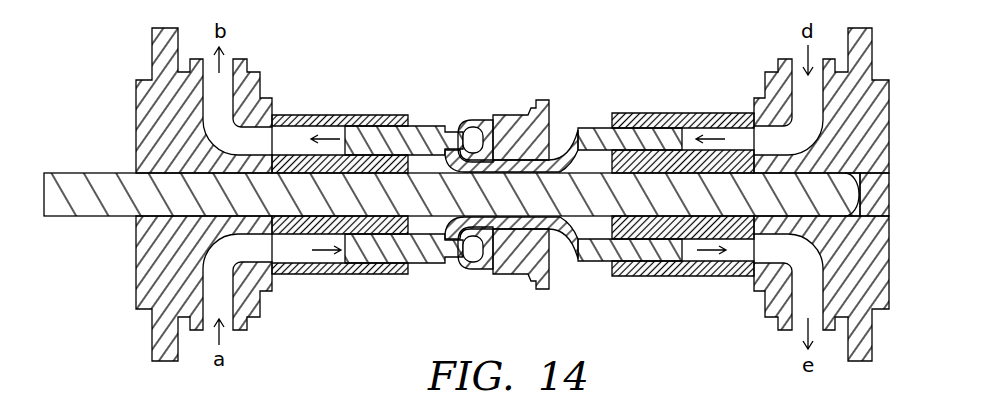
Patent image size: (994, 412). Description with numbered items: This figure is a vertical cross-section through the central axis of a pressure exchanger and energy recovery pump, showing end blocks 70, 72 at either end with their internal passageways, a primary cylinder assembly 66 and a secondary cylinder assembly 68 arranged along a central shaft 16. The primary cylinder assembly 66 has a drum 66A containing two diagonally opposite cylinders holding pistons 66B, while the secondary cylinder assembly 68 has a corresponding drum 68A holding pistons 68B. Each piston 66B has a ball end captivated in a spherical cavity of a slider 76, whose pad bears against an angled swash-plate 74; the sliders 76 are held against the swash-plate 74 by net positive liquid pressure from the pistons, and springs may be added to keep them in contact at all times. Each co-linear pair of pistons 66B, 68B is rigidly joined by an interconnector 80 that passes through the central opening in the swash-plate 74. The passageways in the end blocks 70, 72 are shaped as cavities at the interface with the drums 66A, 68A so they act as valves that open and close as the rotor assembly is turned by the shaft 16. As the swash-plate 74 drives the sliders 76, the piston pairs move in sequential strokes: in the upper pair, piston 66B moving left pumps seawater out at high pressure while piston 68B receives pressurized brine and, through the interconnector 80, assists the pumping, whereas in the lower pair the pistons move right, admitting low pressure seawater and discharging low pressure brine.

The shaft 16 is at (102, 182).
The end block 70 is at (183, 134).
The end block 72 is at (873, 134).
The primary cylinder assembly 66 is at (367, 159).
The drum 66A is at (366, 115).
The piston 66B is at (435, 126).
The secondary cylinder assembly 68 is at (666, 157).
The drum 68A is at (670, 113).
The piston 68B is at (630, 175).
The slider 76 is at (488, 118).
The swash-plate 74 is at (533, 102).
The interconnector 80 is at (577, 237).